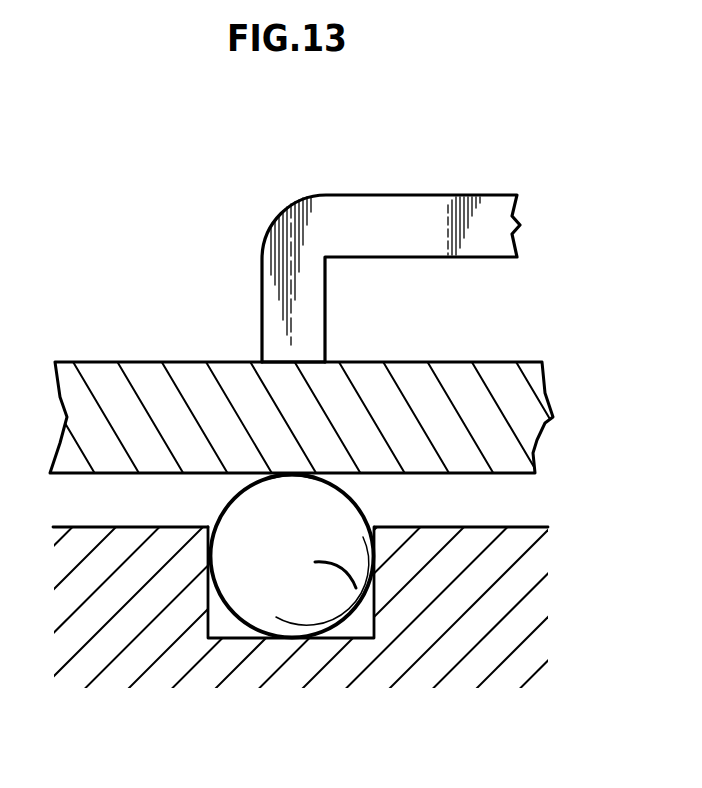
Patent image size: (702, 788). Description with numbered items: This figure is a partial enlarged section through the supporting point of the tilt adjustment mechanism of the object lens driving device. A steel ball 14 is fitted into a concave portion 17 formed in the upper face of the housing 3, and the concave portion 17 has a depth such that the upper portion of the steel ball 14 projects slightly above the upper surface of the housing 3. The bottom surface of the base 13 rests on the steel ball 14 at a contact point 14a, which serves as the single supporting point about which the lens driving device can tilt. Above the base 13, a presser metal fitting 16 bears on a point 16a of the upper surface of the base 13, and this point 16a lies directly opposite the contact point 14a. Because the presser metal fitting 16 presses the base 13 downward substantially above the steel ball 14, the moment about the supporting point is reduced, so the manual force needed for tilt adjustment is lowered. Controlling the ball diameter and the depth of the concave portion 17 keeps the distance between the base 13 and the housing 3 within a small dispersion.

The base 13 is at (433, 362).
The presser metal fitting 16 is at (411, 216).
The point 16a is at (272, 362).
The housing 3 is at (503, 547).
The concave portion 17 is at (342, 640).
The steel ball 14 is at (357, 590).
The contact point 14a is at (284, 475).